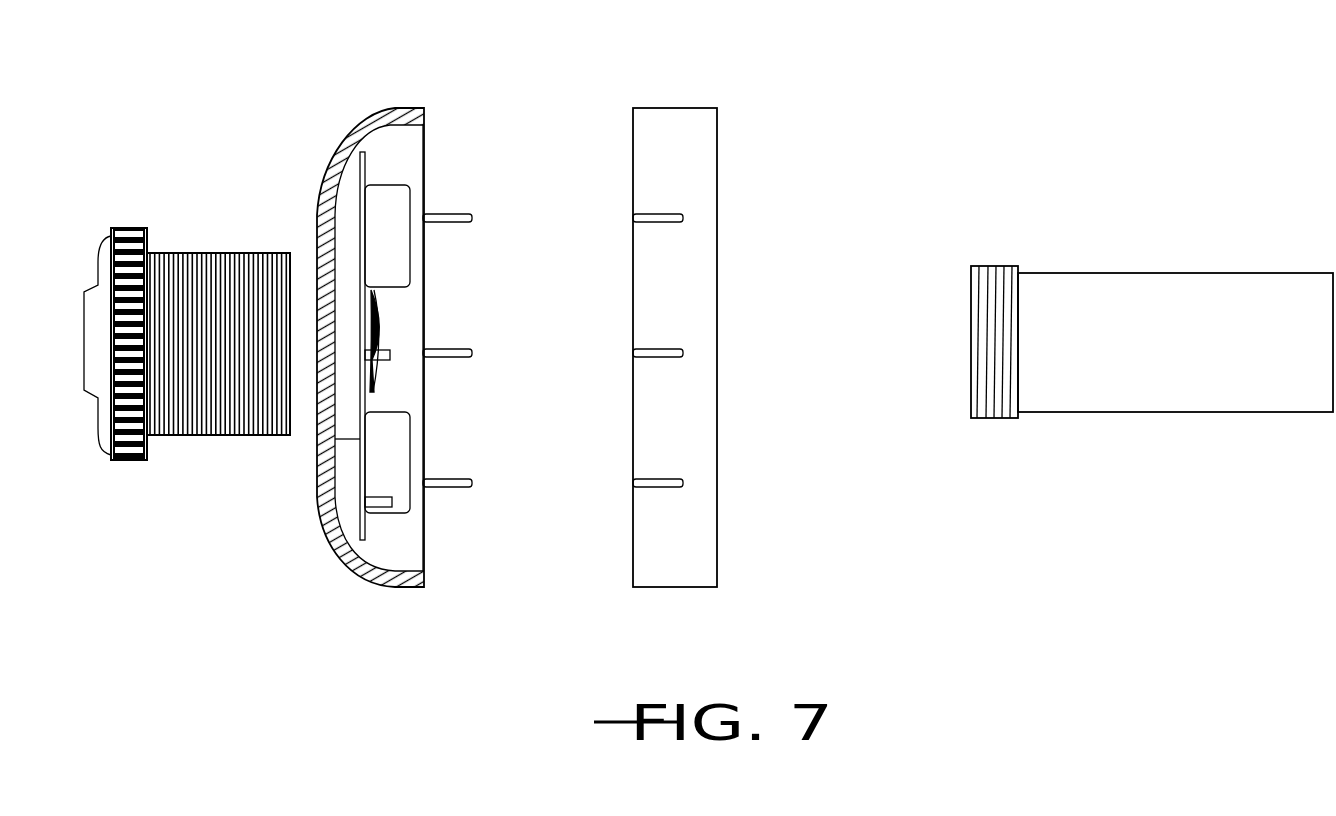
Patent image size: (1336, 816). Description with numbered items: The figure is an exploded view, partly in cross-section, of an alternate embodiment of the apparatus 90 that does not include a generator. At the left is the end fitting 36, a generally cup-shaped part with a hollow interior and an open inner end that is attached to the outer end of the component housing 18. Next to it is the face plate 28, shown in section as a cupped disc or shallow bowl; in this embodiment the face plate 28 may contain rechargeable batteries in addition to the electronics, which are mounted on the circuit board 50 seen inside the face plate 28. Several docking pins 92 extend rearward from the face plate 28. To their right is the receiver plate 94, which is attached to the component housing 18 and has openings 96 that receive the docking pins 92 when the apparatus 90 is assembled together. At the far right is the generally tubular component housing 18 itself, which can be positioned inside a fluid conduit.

The apparatus 90 is at (275, 142).
The end fitting 36 is at (199, 253).
The face plate 28 is at (371, 114).
The circuit board 50 is at (366, 170).
The docking pins 92 is at (450, 223).
The receiver plate 94 is at (718, 157).
The openings 96 is at (650, 224).
The component housing 18 is at (1162, 273).